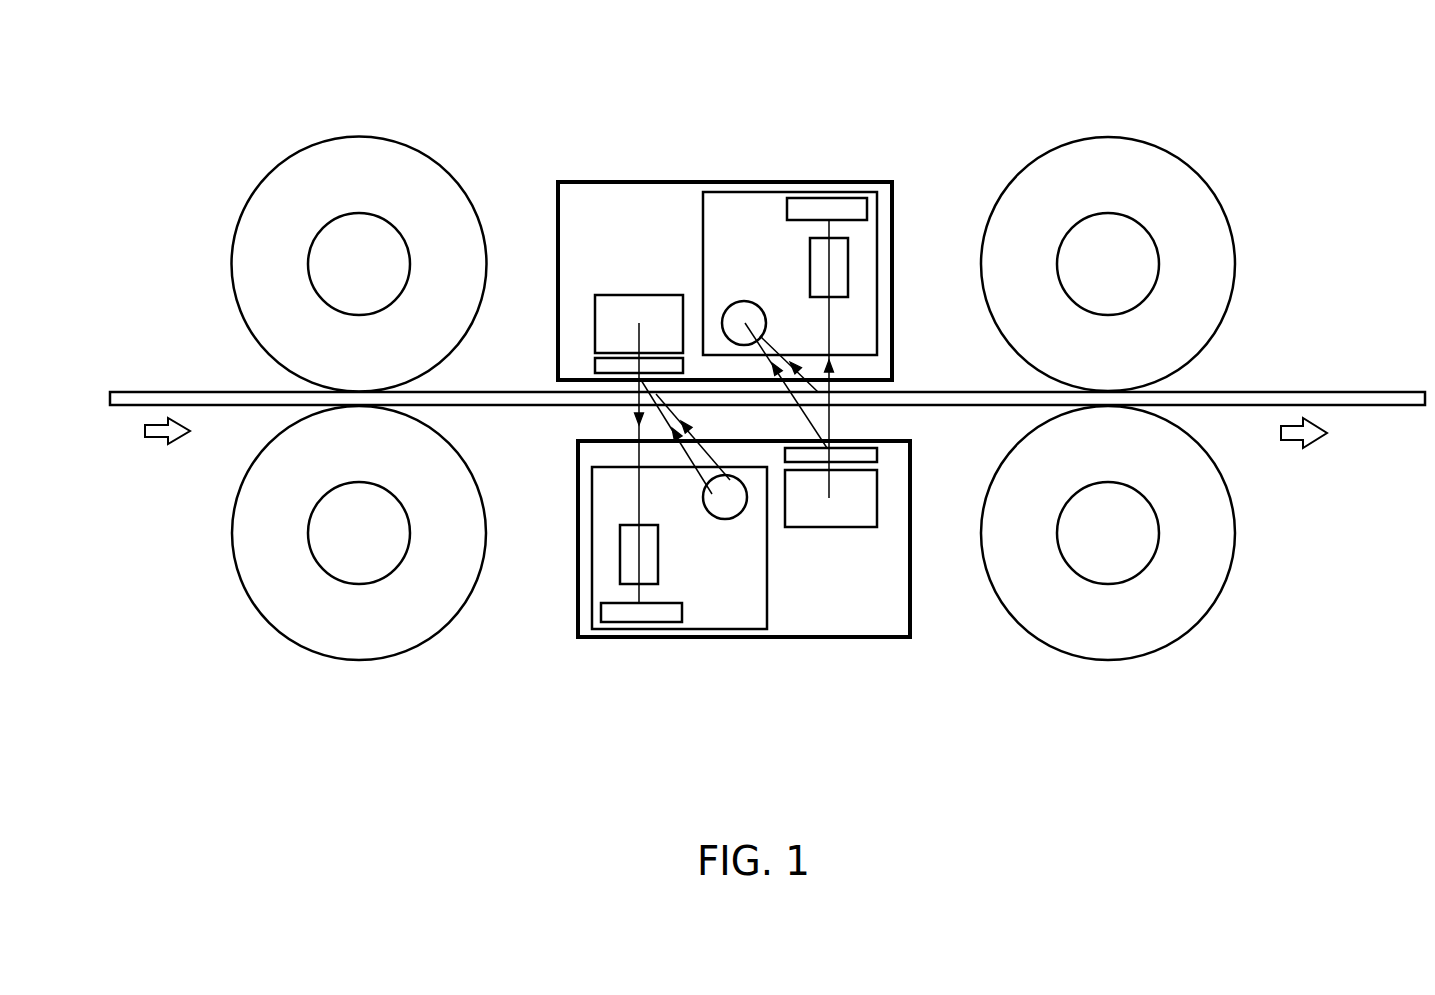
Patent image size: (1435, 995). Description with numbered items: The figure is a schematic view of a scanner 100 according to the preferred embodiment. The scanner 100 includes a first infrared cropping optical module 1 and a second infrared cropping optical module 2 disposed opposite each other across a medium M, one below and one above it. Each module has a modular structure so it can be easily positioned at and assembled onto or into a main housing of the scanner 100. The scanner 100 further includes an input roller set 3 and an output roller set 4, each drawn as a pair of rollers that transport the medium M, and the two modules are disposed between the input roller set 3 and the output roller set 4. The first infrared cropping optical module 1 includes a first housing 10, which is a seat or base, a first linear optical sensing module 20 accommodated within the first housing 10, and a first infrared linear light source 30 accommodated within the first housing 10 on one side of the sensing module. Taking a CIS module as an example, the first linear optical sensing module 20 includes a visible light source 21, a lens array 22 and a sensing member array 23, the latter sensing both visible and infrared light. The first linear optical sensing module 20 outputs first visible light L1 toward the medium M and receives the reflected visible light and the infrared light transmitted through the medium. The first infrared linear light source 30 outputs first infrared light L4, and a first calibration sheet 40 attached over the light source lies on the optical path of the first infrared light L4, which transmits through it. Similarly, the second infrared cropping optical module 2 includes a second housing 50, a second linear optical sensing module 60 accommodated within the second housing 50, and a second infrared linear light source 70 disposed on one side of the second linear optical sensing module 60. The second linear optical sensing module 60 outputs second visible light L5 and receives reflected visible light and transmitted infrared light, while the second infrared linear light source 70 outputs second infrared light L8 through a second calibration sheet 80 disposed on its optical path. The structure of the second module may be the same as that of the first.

The scanner 100 is at (765, 49).
The first infrared cropping optical module 1 is at (742, 570).
The second infrared cropping optical module 2 is at (728, 249).
The input roller set 3 is at (228, 242).
The output roller set 4 is at (1228, 208).
The medium M is at (1255, 394).
The first housing 10 is at (805, 637).
The first linear optical sensing module 20 is at (653, 637).
The visible light source 21 is at (735, 313).
The lens array 22 is at (812, 273).
The sensing member array 23 is at (787, 210).
The first infrared linear light source 30 is at (877, 527).
The first calibration sheet 40 is at (870, 453).
The second housing 50 is at (775, 180).
The second linear optical sensing module 60 is at (877, 260).
The second infrared linear light source 70 is at (597, 318).
The second calibration sheet 80 is at (597, 367).
The first visible light L1 is at (684, 440).
The first infrared light L4 is at (830, 485).
The second visible light L5 is at (822, 392).
The second infrared light L8 is at (637, 338).